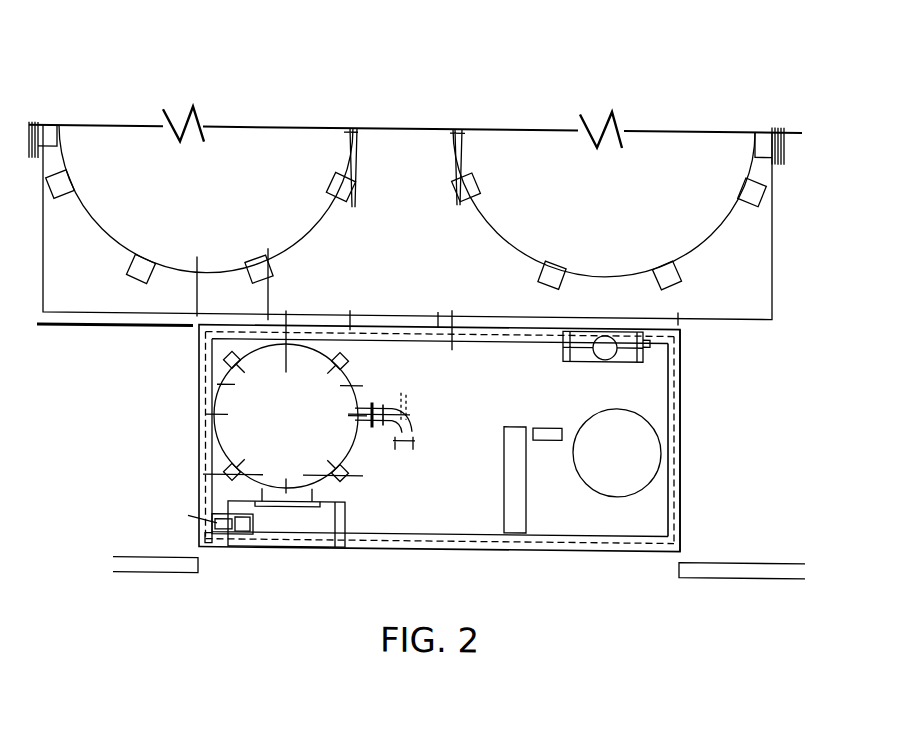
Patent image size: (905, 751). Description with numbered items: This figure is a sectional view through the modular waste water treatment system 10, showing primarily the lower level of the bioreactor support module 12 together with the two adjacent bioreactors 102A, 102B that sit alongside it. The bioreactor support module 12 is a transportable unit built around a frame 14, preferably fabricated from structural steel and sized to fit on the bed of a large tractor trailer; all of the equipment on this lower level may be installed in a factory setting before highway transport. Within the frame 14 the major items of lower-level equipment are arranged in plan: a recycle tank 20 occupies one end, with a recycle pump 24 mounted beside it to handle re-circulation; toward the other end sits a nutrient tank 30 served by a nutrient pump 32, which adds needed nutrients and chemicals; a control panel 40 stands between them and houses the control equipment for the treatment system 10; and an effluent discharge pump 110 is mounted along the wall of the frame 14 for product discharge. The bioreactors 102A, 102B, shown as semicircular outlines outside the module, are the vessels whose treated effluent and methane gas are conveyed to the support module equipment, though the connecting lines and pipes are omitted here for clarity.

The modular waste water treatment system 10 is at (603, 56).
The bioreactor support module 12 is at (708, 394).
The frame 14 is at (680, 474).
The recycle tank 20 is at (300, 427).
The recycle pump 24 is at (303, 538).
The nutrient tank 30 is at (630, 465).
The nutrient pump 32 is at (550, 427).
The control panel 40 is at (508, 462).
The discharge pump 110 is at (588, 362).
The bioreactor 102A is at (229, 195).
The bioreactor 102B is at (636, 199).